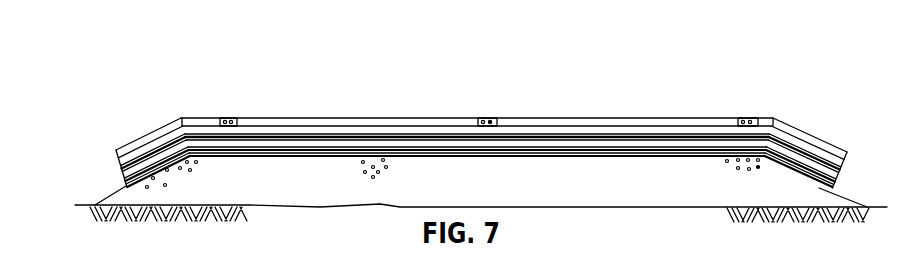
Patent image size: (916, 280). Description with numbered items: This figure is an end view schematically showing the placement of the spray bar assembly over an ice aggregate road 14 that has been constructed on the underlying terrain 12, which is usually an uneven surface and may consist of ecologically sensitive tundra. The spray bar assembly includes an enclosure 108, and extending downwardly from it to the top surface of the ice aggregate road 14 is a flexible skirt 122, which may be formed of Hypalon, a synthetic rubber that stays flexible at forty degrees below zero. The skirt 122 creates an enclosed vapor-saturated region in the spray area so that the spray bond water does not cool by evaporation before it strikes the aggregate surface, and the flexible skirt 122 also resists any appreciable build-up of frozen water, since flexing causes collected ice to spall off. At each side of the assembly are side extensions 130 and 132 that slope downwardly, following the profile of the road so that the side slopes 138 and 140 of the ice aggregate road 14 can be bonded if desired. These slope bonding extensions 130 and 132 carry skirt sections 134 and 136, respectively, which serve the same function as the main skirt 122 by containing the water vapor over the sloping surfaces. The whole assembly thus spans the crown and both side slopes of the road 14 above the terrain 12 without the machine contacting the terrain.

The underlying terrain 12 is at (425, 207).
The ice aggregate road 14 is at (543, 157).
The enclosure 108 is at (438, 115).
The flexible skirt 122 is at (357, 138).
The side extension 130 is at (158, 125).
The side extension 132 is at (797, 128).
The skirt section 134 is at (122, 175).
The skirt section 136 is at (833, 173).
The side slope 138 is at (142, 183).
The side slope 140 is at (818, 186).